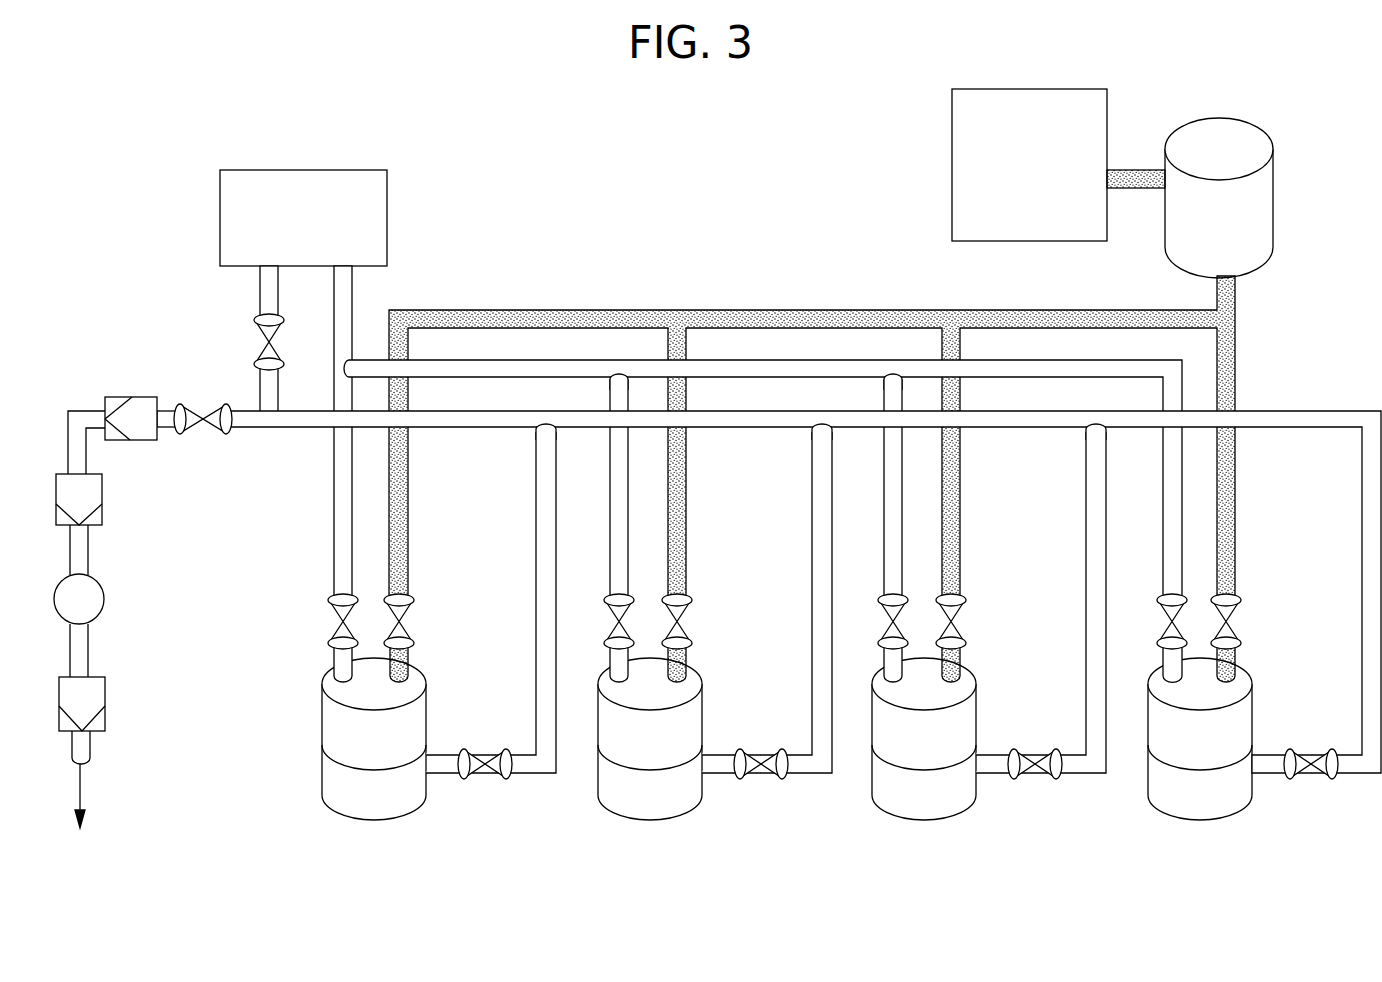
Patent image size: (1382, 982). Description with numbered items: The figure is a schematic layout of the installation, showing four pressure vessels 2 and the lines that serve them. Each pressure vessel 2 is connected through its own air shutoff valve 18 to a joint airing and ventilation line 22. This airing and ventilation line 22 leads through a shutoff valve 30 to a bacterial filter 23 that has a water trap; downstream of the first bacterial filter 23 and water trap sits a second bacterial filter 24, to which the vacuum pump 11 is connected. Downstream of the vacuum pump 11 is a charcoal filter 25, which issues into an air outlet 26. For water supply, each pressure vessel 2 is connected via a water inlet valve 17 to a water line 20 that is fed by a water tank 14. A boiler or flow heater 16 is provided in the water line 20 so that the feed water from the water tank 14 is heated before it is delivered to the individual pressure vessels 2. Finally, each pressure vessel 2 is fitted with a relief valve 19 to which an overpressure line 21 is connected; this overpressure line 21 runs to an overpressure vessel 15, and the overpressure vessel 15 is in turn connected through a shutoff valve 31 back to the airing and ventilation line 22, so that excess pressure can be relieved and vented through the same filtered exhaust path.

The pressure vessel 2 is at (348, 848).
The vacuum pump 11 is at (92, 602).
The water tank 14 is at (1020, 108).
The overpressure vessel 15 is at (287, 183).
The boiler or flow heater 16 is at (1255, 197).
The water inlet valve 17 is at (398, 635).
The air shutoff valve 18 is at (470, 768).
The relief valve 19 is at (342, 633).
The water line 20 is at (787, 321).
The overpressure line 21 is at (558, 367).
The airing and ventilation line 22 is at (443, 420).
The bacterial filter 23 is at (141, 415).
The second bacterial filter 24 is at (90, 496).
The charcoal filter 25 is at (92, 693).
The air outlet 26 is at (80, 785).
The shutoff valve 30 is at (195, 425).
The shutoff valve 31 is at (267, 357).